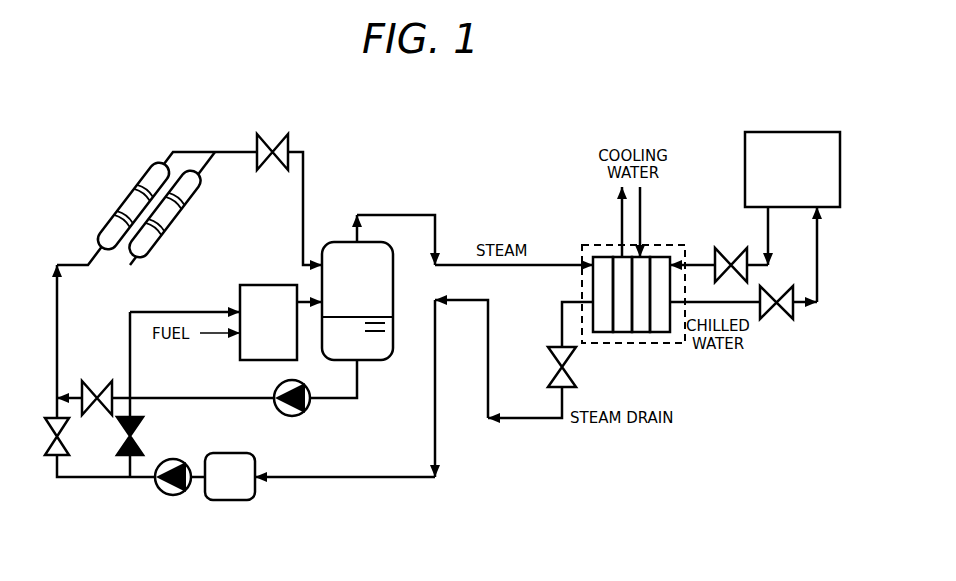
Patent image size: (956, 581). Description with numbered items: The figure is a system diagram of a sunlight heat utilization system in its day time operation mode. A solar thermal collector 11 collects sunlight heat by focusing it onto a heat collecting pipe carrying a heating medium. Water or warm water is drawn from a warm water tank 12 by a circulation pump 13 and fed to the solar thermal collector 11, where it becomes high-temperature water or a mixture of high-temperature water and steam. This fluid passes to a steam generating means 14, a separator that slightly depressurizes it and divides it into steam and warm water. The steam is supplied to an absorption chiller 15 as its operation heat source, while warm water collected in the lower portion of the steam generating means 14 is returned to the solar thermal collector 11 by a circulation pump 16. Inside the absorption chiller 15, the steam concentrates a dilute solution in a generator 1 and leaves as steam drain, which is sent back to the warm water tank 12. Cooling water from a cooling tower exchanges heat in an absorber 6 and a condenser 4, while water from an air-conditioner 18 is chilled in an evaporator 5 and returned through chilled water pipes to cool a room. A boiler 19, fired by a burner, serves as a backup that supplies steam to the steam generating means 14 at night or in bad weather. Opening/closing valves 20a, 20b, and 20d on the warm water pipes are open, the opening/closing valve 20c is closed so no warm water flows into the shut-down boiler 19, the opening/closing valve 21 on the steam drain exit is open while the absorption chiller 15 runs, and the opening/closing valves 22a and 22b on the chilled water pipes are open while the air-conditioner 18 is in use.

The generator 1 is at (600, 332).
The condenser 4 is at (620, 332).
The evaporator 5 is at (660, 332).
The absorber 6 is at (642, 332).
The solar thermal collector 11 is at (125, 203).
The warm water tank 12 is at (233, 500).
The circulation pump 13 is at (173, 495).
The steam generating means 14 is at (393, 292).
The absorption chiller 15 is at (663, 244).
The circulation pump 16 is at (310, 412).
The air-conditioner 18 is at (792, 130).
The boiler 19 is at (263, 285).
The opening/closing valve 20a is at (69, 433).
The opening/closing valve 20b is at (97, 380).
The opening/closing valve 20c is at (143, 437).
The opening/closing valve 20d is at (272, 172).
The opening/closing valve 21 is at (554, 347).
The opening/closing valve 22a is at (738, 248).
The opening/closing valve 22b is at (778, 320).